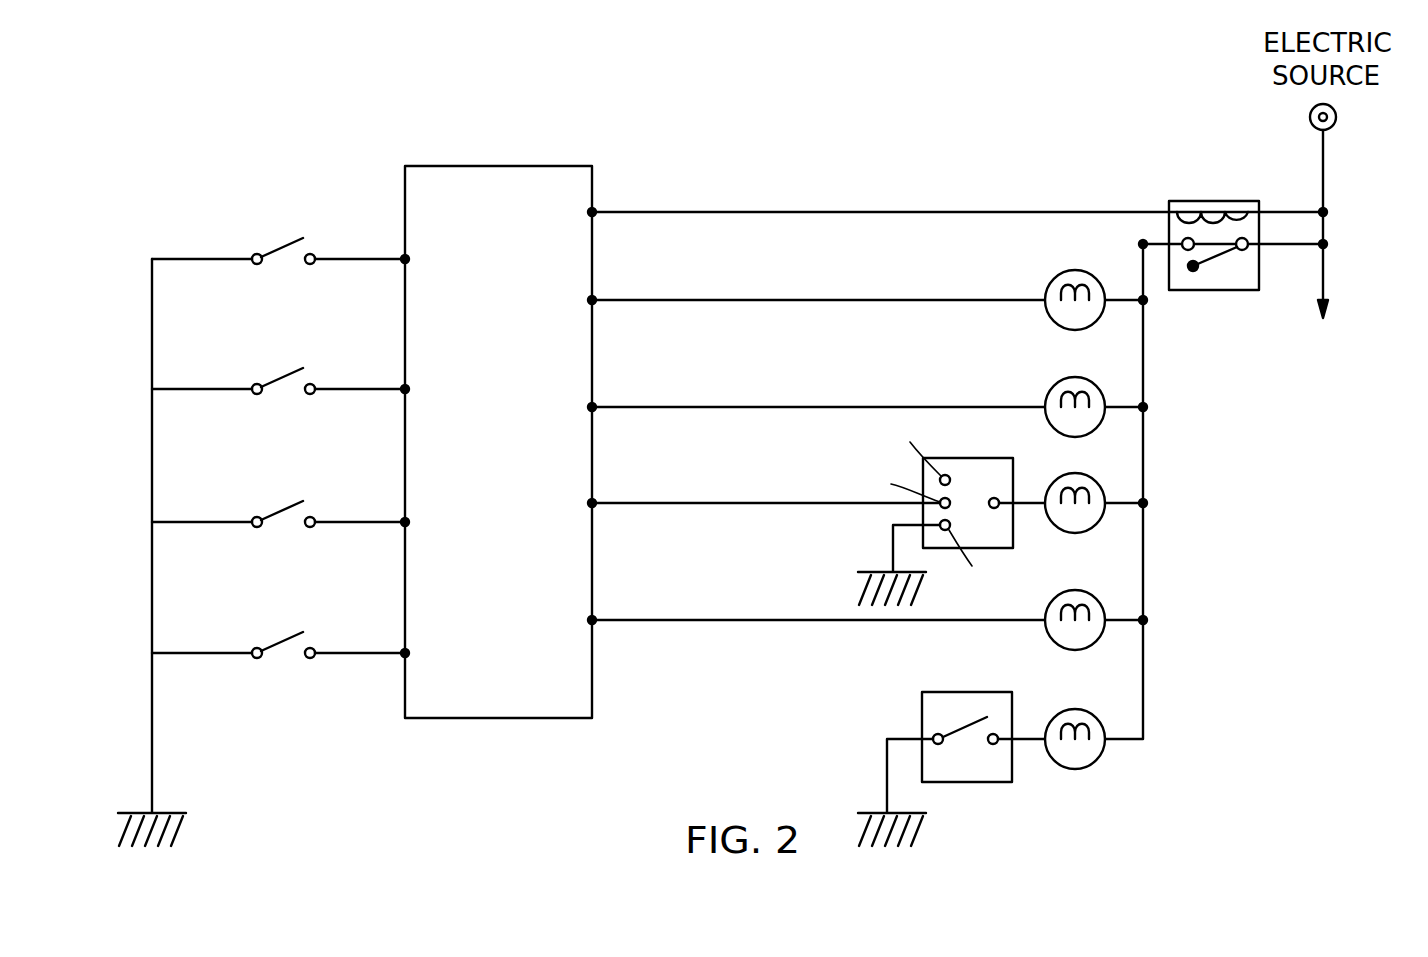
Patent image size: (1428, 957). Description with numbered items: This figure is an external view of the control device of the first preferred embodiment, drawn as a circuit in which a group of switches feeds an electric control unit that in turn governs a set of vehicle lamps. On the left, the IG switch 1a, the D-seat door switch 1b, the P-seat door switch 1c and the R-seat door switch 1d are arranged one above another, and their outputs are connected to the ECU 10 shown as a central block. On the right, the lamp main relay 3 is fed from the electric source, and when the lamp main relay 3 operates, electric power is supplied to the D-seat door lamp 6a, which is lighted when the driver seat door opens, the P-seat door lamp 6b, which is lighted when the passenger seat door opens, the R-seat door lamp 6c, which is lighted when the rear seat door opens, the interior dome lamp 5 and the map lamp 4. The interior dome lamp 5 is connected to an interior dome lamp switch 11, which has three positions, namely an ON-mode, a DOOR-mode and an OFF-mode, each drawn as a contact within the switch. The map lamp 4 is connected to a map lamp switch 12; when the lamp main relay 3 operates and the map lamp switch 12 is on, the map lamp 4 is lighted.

The IG switch 1a is at (270, 250).
The D-seat door switch 1b is at (270, 380).
The P-seat door switch 1c is at (270, 513).
The R-seat door switch 1d is at (270, 644).
The ECU 10 is at (430, 166).
The lamp main relay 3 is at (1190, 201).
The D-seat door lamp 6a is at (1052, 283).
The P-seat door lamp 6b is at (1050, 391).
The R-seat door lamp 6c is at (1050, 640).
The interior dome lamp 5 is at (1103, 490).
The interior dome lamp switch 11 is at (920, 510).
The map lamp switch 12 is at (922, 712).
The map lamp 4 is at (1115, 800).